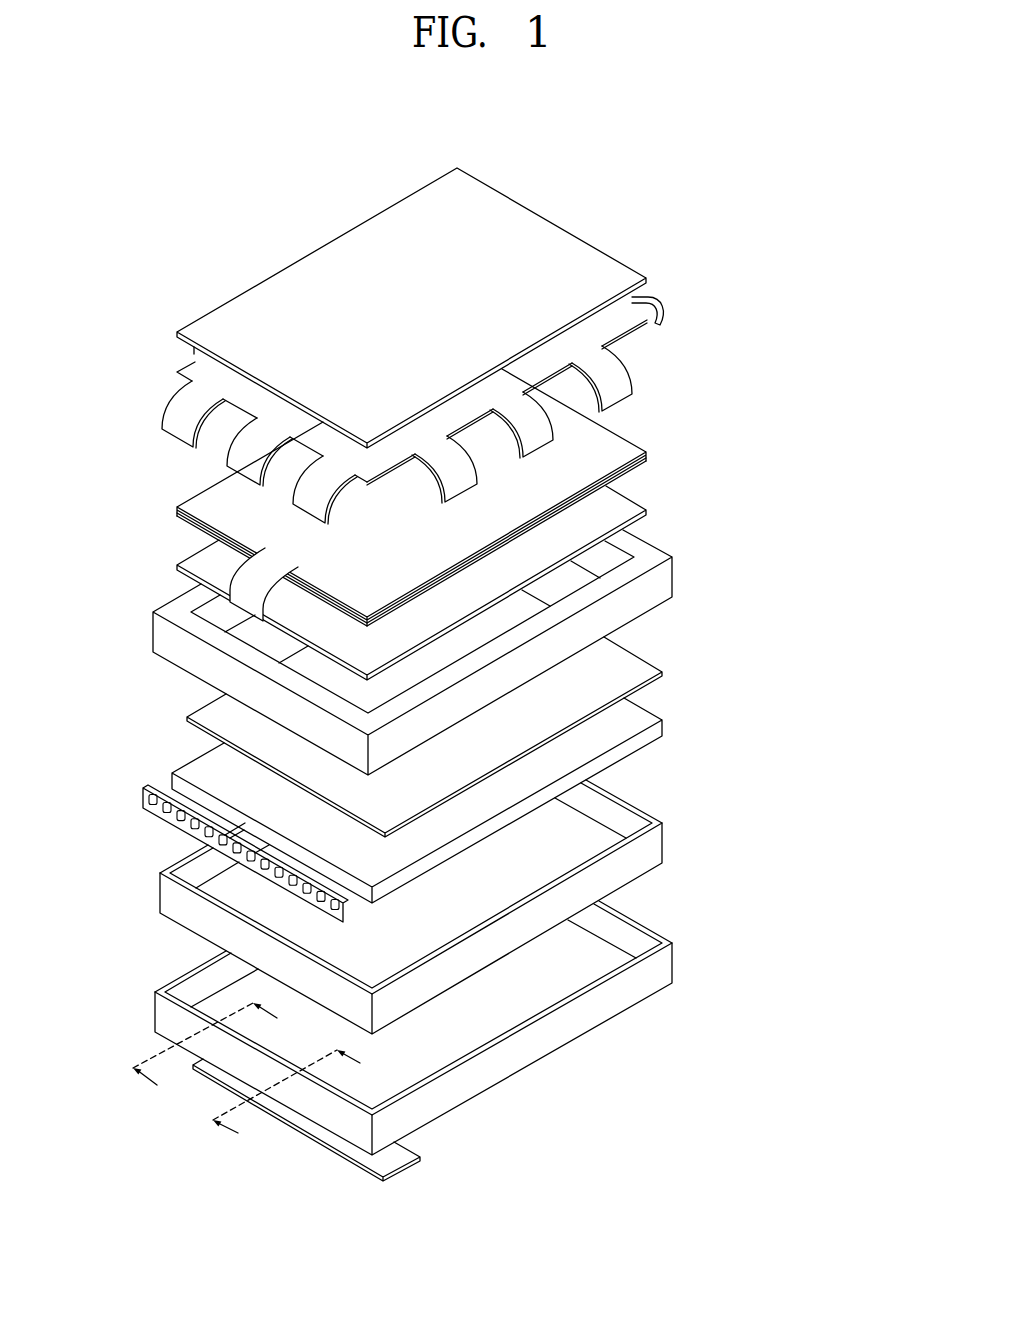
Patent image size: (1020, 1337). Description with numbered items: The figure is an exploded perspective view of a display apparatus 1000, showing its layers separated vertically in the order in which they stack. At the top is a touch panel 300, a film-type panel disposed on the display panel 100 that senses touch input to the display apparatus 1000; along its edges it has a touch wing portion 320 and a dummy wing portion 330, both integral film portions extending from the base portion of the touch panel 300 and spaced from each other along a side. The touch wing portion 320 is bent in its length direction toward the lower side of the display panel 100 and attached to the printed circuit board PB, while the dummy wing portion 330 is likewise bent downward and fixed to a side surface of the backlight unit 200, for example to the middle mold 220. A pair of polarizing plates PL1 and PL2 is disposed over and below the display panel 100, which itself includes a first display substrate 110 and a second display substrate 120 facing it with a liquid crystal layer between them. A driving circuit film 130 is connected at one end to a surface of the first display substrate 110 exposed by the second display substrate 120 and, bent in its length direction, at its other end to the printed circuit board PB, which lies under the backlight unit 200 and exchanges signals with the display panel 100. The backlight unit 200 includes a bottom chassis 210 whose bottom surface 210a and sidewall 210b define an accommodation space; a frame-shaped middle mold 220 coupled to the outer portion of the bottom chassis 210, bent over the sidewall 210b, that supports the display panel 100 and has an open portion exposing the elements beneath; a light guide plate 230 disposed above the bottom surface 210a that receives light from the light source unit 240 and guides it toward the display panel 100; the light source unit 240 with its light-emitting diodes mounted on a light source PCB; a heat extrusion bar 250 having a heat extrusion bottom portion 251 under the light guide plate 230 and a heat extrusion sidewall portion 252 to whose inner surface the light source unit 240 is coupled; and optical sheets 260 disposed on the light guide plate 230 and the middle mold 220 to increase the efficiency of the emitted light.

The display apparatus 1000 is at (618, 143).
The polarizing plate PL1 is at (624, 272).
The touch panel 300 is at (676, 358).
The dummy wing portion 330 is at (176, 402).
The touch wing portion 320 is at (238, 452).
The display panel 100 is at (713, 434).
The second display substrate 120 is at (649, 463).
The first display substrate 110 is at (649, 465).
The driving circuit film 130 is at (250, 568).
The polarizing plate PL2 is at (649, 516).
The backlight unit 200 is at (813, 568).
The middle mold 220 is at (657, 585).
The optical sheets 260 is at (675, 668).
The light guide plate 230 is at (657, 725).
The light source unit 240 is at (132, 796).
The heat extrusion bar 250 is at (760, 783).
The heat extrusion bottom portion 251 is at (596, 846).
The heat extrusion sidewall portion 252 is at (657, 847).
The bottom chassis 210 is at (760, 892).
The bottom surface 210a is at (596, 959).
The sidewall 210b is at (657, 970).
The printed circuit board PB is at (413, 1157).